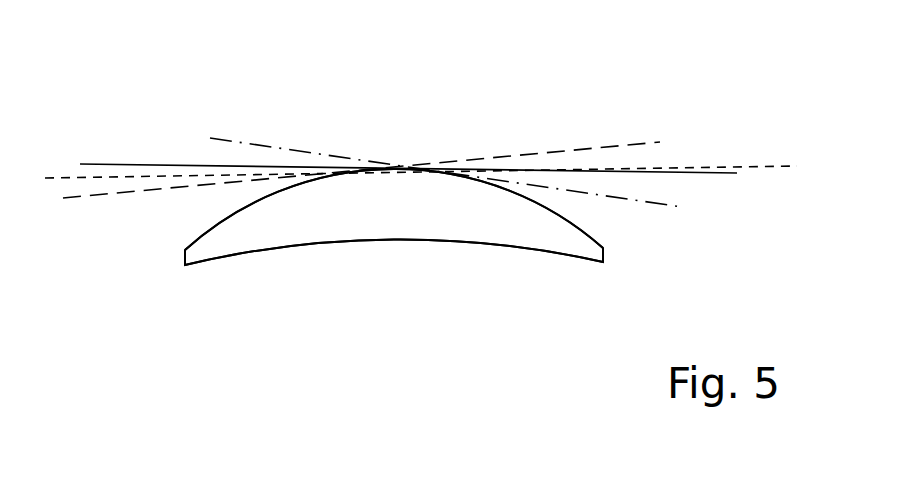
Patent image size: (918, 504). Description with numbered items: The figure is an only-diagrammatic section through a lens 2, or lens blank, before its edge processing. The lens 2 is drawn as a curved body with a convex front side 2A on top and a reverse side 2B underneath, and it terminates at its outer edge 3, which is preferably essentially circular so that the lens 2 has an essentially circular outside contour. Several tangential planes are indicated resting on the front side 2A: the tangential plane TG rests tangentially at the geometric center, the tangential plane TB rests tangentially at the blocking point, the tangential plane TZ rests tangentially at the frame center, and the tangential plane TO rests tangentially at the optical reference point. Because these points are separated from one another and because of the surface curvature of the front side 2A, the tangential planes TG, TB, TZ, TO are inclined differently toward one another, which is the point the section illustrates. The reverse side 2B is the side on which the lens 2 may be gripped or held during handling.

The lens 2 is at (363, 218).
The front side 2A is at (492, 182).
The reverse side 2B is at (477, 243).
The edge 3 is at (606, 253).
The tangential plane TZ is at (112, 165).
The tangential plane TB is at (224, 138).
The tangential plane TO is at (560, 152).
The tangential plane TG is at (773, 165).